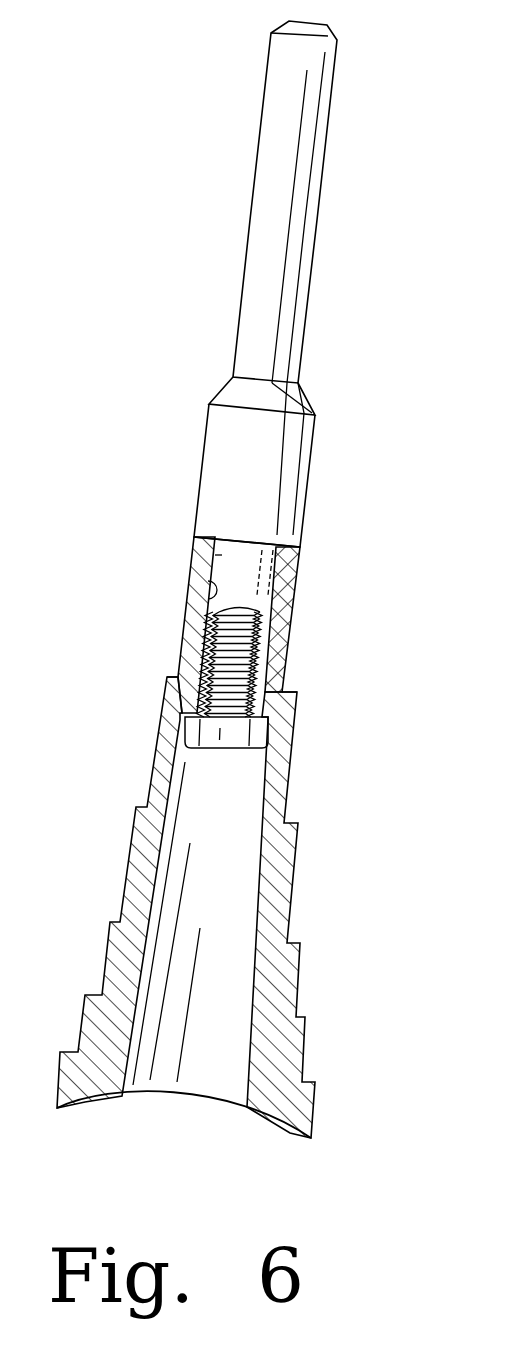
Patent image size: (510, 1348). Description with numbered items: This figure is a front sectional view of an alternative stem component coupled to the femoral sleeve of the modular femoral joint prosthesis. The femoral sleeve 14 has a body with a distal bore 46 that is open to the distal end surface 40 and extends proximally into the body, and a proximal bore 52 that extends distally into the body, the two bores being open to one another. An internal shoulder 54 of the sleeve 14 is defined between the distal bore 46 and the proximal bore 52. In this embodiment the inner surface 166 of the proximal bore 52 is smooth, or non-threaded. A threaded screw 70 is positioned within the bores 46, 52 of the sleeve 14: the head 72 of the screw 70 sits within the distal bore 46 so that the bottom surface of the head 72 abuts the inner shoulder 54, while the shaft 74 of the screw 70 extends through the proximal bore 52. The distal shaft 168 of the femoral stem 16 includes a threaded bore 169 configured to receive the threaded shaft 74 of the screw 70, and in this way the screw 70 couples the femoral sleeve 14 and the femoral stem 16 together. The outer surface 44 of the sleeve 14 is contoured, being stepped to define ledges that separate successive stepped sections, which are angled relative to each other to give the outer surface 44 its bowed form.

The femoral stem 16 is at (190, 313).
The distal shaft 168 is at (195, 542).
The proximal bore 52 is at (188, 590).
The inner surface 166 is at (297, 557).
The shaft 74 is at (270, 618).
The threaded bore 169 is at (275, 650).
The threaded screw 70 is at (298, 705).
The internal shoulder 54 is at (164, 713).
The head 72 is at (240, 754).
The femoral sleeve 14 is at (307, 872).
The outer surface 44 is at (290, 910).
The distal end surface 40 is at (305, 1148).
The distal bore 46 is at (198, 1052).